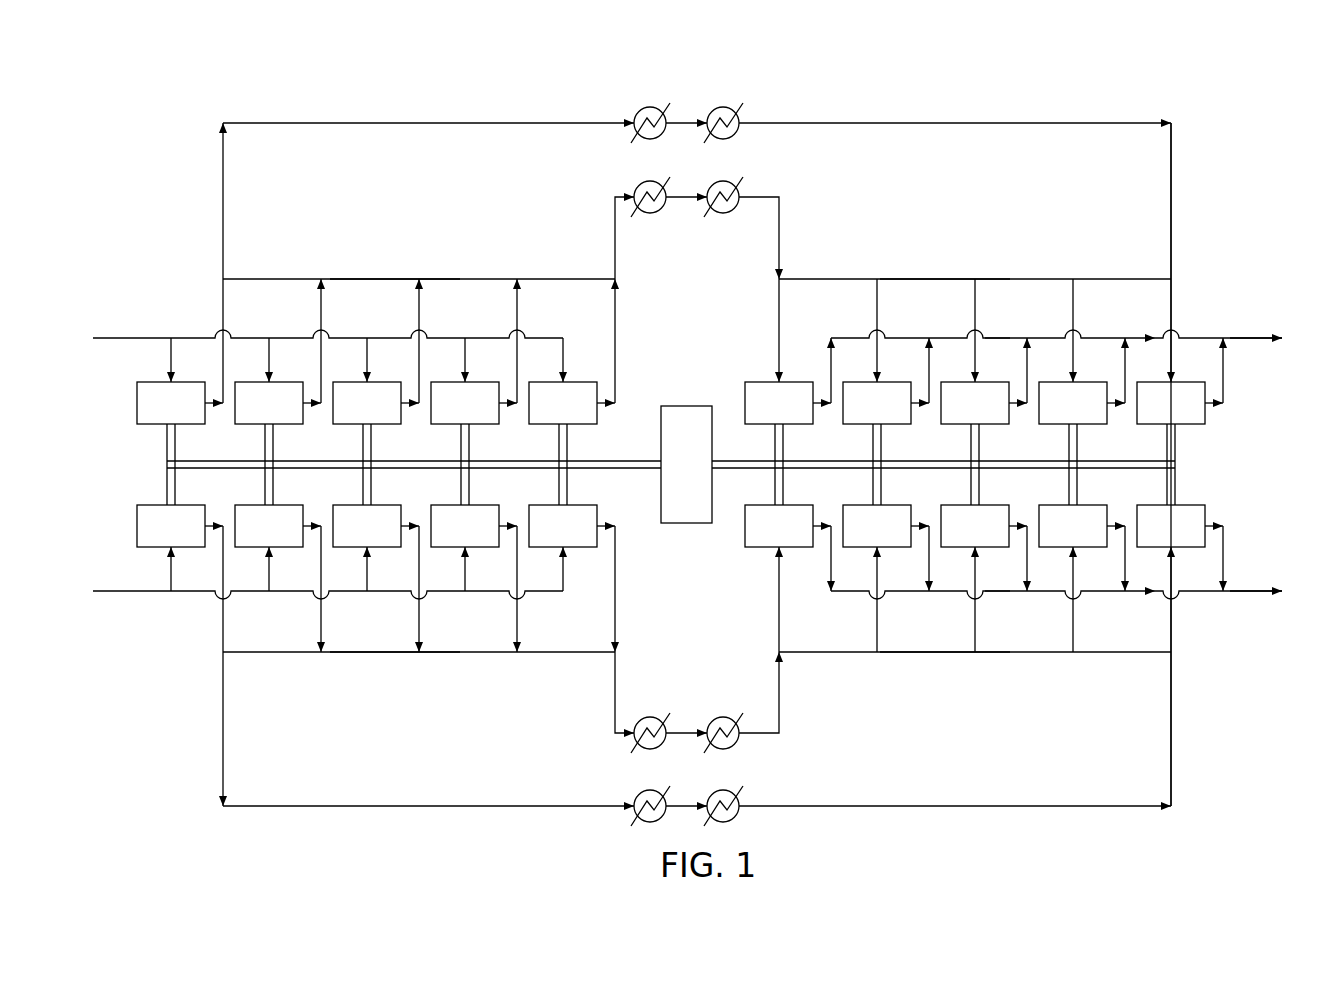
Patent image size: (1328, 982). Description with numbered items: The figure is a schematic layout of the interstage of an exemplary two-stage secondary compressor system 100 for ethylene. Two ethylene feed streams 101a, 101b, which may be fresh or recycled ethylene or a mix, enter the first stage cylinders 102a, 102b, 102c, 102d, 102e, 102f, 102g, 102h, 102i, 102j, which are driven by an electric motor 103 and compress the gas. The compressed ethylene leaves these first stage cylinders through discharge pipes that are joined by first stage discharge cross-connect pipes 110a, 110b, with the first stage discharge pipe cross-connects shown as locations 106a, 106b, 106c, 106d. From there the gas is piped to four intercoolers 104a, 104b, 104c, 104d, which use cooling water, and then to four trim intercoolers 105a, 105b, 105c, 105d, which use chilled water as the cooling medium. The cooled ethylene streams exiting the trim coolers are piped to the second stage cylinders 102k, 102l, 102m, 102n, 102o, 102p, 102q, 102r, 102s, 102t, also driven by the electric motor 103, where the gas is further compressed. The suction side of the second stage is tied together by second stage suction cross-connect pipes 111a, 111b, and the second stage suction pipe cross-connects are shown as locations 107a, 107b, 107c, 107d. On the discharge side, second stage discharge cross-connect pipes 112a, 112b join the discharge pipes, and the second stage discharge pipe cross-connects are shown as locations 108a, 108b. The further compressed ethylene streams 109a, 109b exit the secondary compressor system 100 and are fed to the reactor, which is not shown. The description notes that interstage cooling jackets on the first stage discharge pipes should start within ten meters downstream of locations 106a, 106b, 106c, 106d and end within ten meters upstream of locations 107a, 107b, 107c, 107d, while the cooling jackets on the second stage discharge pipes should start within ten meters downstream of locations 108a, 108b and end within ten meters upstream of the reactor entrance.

The two-stage secondary compressor system 100 is at (1184, 109).
The ethylene feed stream 101a is at (110, 338).
The ethylene feed stream 101b is at (108, 591).
The first stage cylinder 102a is at (180, 392).
The first stage cylinder 102b is at (278, 392).
The first stage cylinder 102c is at (376, 392).
The first stage cylinder 102d is at (474, 392).
The first stage cylinder 102e is at (572, 392).
The first stage cylinder 102f is at (180, 578).
The first stage cylinder 102g is at (278, 578).
The first stage cylinder 102h is at (376, 578).
The first stage cylinder 102i is at (474, 578).
The first stage cylinder 102j is at (572, 578).
The second stage cylinder 102k is at (788, 392).
The second stage cylinder 102l is at (886, 392).
The second stage cylinder 102m is at (984, 392).
The second stage cylinder 102n is at (1082, 392).
The second stage cylinder 102o is at (1180, 392).
The second stage cylinder 102p is at (788, 578).
The second stage cylinder 102q is at (886, 578).
The second stage cylinder 102r is at (984, 578).
The second stage cylinder 102s is at (1082, 578).
The second stage cylinder 102t is at (1180, 578).
The electric motor 103 is at (671, 464).
The intercooler 104a is at (637, 112).
The intercooler 104b is at (637, 186).
The intercooler 104c is at (636, 745).
The intercooler 104d is at (637, 793).
The trim intercooler 105a is at (737, 112).
The trim intercooler 105b is at (737, 186).
The trim intercooler 105c is at (740, 745).
The trim intercooler 105d is at (737, 793).
The first stage discharge pipe cross-connect location 106a is at (224, 279).
The first stage discharge pipe cross-connect location 106b is at (614, 279).
The first stage discharge pipe cross-connect location 106c is at (224, 652).
The first stage discharge pipe cross-connect location 106d is at (614, 652).
The second stage suction pipe cross-connect location 107a is at (780, 279).
The second stage suction pipe cross-connect location 107b is at (1171, 279).
The second stage suction pipe cross-connect location 107c is at (780, 652).
The second stage suction pipe cross-connect location 107d is at (1171, 652).
The second stage discharge pipe cross-connect location 108a is at (1223, 338).
The second stage discharge pipe cross-connect location 108b is at (1223, 591).
The further compressed ethylene stream 109a is at (1253, 338).
The further compressed ethylene stream 109b is at (1253, 591).
The first stage discharge cross-connect pipe 110a is at (395, 279).
The first stage discharge cross-connect pipe 110b is at (460, 652).
The second stage suction cross-connect pipe 111a is at (955, 279).
The second stage suction cross-connect pipe 111b is at (995, 652).
The second stage discharge cross-connect pipe 112a is at (993, 338).
The second stage discharge cross-connect pipe 112b is at (996, 591).